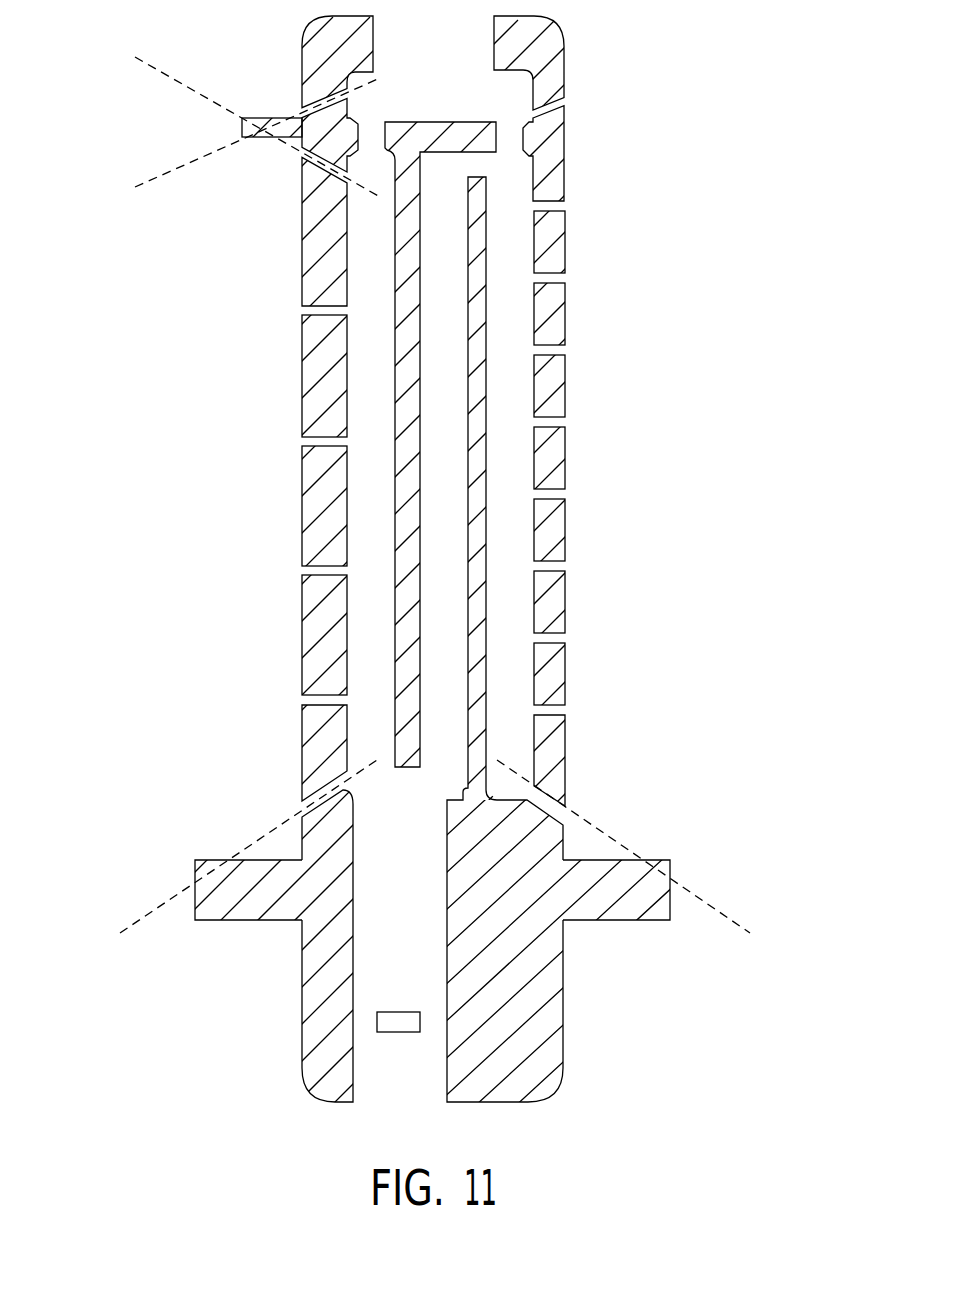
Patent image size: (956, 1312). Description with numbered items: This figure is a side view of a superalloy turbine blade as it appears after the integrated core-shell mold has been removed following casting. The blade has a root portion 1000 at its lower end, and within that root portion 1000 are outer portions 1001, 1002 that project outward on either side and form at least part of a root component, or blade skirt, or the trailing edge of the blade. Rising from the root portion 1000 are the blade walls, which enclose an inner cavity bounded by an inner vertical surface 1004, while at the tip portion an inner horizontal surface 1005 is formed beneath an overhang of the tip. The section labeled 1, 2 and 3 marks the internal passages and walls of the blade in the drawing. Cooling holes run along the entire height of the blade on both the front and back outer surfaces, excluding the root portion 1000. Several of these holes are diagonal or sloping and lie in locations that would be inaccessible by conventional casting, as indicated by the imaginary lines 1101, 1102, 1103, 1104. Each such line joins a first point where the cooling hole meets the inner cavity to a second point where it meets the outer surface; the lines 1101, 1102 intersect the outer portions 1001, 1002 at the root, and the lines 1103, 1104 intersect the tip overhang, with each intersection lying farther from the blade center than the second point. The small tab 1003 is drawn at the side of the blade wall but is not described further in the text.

The root portion 1000 is at (508, 1012).
The outer portion 1001 is at (240, 895).
The outer portion 1002 is at (627, 895).
The tab 1003 is at (285, 128).
The inner vertical surface 1004 is at (475, 410).
The inner horizontal surface 1005 is at (453, 137).
The imaginary line 1101 is at (137, 923).
The imaginary line 1102 is at (737, 922).
The imaginary line 1103 is at (150, 180).
The imaginary line 1104 is at (360, 203).
The first channel 1 is at (376, 441).
The second channel 2 is at (444, 521).
The third channel 3 is at (511, 443).